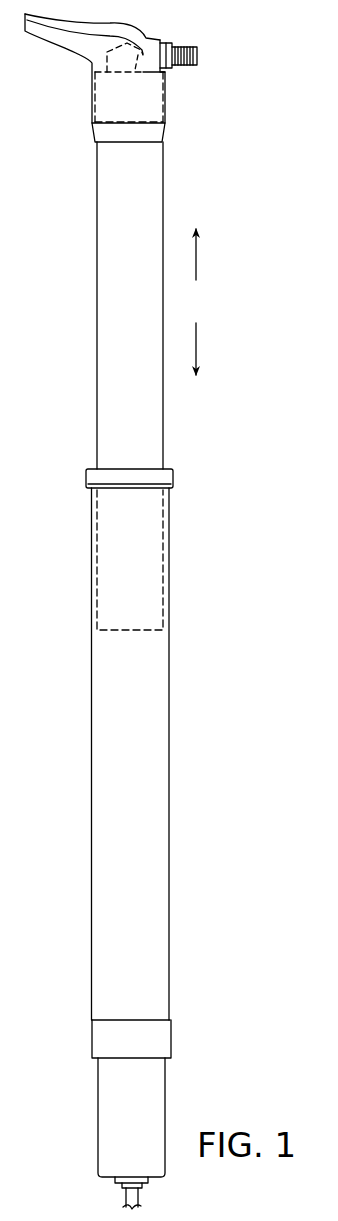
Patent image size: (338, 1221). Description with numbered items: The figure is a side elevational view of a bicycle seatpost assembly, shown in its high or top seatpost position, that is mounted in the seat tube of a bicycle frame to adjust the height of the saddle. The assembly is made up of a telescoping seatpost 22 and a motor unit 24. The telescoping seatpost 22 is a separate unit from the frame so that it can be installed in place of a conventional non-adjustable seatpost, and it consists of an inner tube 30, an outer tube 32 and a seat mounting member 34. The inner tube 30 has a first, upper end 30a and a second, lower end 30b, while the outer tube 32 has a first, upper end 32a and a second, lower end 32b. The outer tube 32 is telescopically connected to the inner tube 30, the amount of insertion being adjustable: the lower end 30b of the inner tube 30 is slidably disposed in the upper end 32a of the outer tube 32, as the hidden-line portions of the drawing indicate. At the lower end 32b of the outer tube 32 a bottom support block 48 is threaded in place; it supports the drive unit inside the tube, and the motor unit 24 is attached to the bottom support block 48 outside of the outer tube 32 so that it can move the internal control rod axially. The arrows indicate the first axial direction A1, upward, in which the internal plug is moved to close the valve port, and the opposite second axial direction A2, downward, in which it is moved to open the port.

The telescoping seatpost 22 is at (211, 152).
The motor unit 24 is at (97, 1123).
The inner tube 30 is at (97, 303).
The first (upper) end 30a is at (143, 40).
The second (lower) end 30b is at (138, 632).
The outer tube 32 is at (92, 800).
The first (upper) end 32a is at (95, 470).
The second (lower) end 32b is at (143, 1021).
The seat mounting member 34 is at (90, 97).
The bottom support block 48 is at (92, 1038).
The first axial direction A1 is at (197, 263).
The second axial direction A2 is at (197, 343).